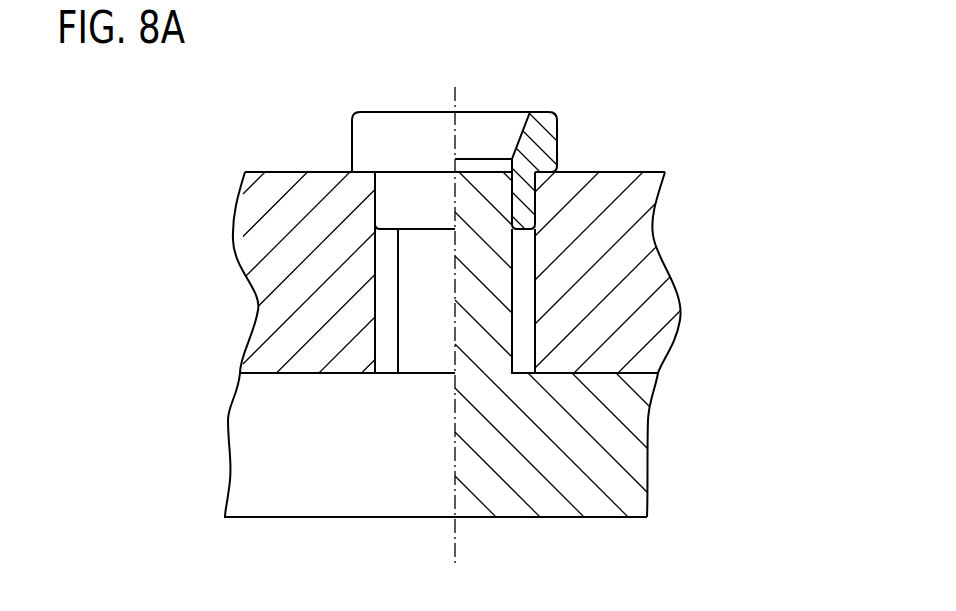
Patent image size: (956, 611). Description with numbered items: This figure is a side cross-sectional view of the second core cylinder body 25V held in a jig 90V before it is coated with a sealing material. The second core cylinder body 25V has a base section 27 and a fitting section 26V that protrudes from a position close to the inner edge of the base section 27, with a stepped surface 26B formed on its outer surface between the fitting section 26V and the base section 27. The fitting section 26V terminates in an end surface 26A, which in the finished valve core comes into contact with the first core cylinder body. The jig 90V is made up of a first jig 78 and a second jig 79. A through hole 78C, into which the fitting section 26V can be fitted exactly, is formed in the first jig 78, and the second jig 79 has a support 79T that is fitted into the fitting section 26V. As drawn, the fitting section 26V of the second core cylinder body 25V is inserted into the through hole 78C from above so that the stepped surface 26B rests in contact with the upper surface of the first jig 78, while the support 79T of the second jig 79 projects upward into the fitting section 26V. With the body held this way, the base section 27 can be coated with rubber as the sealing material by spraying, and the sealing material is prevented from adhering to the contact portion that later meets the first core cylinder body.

The second core cylinder body 25V is at (580, 100).
The base section 27 is at (540, 146).
The stepped surface 26B is at (556, 164).
The fitting section 26V is at (523, 207).
The end surface 26A is at (520, 237).
The first jig 78 is at (645, 197).
The through hole 78C is at (528, 292).
The second jig 79 is at (628, 418).
The support 79T is at (497, 347).
The jig 90V is at (728, 157).